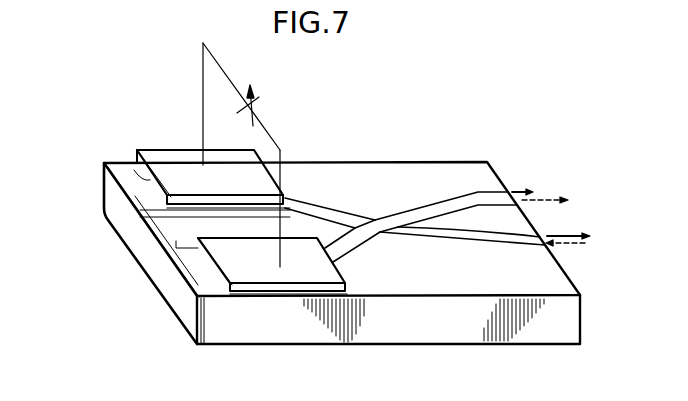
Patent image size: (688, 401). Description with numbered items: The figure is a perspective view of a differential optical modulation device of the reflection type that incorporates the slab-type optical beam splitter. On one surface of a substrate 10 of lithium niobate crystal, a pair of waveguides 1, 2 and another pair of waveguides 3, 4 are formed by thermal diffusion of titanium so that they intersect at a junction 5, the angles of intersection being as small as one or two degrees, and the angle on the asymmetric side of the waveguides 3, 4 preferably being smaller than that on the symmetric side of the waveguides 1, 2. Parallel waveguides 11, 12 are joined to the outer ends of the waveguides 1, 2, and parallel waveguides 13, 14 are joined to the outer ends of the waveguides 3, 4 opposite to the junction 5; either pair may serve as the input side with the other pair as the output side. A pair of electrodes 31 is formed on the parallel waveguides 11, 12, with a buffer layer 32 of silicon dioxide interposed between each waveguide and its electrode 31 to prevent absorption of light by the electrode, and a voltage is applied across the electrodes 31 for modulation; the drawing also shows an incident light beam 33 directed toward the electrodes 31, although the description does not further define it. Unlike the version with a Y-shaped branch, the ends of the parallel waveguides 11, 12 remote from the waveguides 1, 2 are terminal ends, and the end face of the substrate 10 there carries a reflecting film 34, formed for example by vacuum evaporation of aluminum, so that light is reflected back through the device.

The waveguide 1 is at (325, 212).
The waveguide 2 is at (353, 248).
The waveguide 3 is at (437, 207).
The waveguide 4 is at (462, 237).
The junction 5 is at (380, 222).
The substrate 10 is at (570, 323).
The parallel waveguide 11 is at (143, 197).
The parallel waveguide 12 is at (178, 248).
The parallel waveguide 13 is at (497, 199).
The parallel waveguide 14 is at (525, 245).
The electrode 31 is at (163, 151).
The buffer layer 32 is at (150, 190).
The incident light beam 33 is at (255, 110).
The reflecting film 34 is at (195, 335).